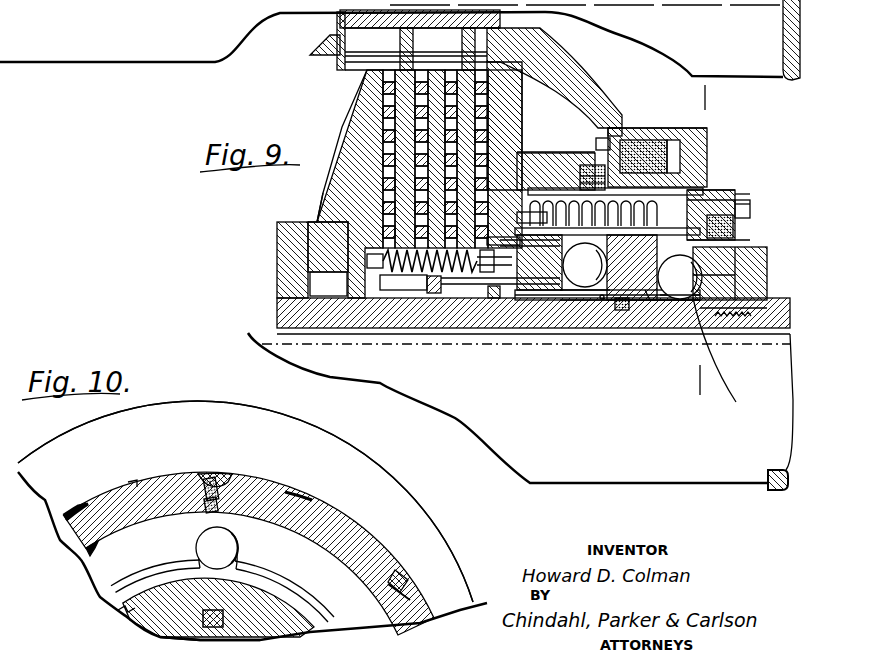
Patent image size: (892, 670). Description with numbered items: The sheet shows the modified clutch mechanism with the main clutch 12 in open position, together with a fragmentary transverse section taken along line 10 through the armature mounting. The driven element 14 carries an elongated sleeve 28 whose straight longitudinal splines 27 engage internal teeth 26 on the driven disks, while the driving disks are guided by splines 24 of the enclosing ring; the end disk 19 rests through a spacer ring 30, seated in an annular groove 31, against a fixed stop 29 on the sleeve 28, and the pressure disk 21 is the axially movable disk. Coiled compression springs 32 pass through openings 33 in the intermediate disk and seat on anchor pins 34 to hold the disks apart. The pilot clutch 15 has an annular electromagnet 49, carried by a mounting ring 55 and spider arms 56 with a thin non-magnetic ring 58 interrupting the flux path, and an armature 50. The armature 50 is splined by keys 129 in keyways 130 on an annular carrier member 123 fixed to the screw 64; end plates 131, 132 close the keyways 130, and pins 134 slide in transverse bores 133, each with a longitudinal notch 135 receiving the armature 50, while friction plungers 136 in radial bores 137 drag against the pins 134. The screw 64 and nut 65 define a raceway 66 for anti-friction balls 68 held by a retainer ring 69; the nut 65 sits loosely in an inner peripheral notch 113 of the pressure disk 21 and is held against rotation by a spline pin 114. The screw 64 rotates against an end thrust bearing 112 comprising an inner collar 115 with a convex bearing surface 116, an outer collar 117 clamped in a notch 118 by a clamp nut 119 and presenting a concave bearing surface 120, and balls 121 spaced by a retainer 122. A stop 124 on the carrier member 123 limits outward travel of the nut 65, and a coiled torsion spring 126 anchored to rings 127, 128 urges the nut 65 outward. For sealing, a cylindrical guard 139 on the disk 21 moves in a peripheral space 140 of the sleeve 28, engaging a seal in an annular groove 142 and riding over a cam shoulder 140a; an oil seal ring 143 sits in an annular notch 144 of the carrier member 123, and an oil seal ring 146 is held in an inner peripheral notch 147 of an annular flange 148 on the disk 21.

In FIG. 9, the section line 10 is at (680, 98).
In FIG. 9, the main clutch 12 is at (337, 118).
In FIG. 9, the driven element 14 is at (776, 360).
In FIG. 10, the driven element 14 is at (140, 635).
In FIG. 9, the pilot clutch 15 is at (669, 125).
In FIG. 9, the end disk 19 is at (338, 160).
In FIG. 9, the pressure disk 21 is at (510, 114).
In FIG. 9, the longitudinal splines 24 is at (362, 44).
In FIG. 9, the teeth 26 is at (416, 268).
In FIG. 9, the longitudinal splines 27 is at (331, 296).
In FIG. 10, the elongated sleeve 28 is at (118, 617).
In FIG. 9, the fixed stop 29 is at (277, 270).
In FIG. 9, the spacer ring 30 is at (315, 224).
In FIG. 9, the annular groove 31 is at (321, 200).
In FIG. 9, the coiled compression springs 32 is at (450, 292).
In FIG. 9, the openings 33 is at (436, 282).
In FIG. 9, the anchor pins 34 is at (372, 266).
In FIG. 9, the annular electromagnet 49 is at (652, 125).
In FIG. 9, the armature 50 is at (708, 157).
In FIG. 10, the armature 50 is at (392, 477).
In FIG. 9, the mounting ring 55 is at (601, 127).
In FIG. 9, the spider arms 56 is at (572, 84).
In FIG. 9, the non-magnetic ring 58 is at (613, 127).
In FIG. 9, the screw 64 is at (590, 300).
In FIG. 9, the nut 65 is at (493, 300).
In FIG. 9, the raceway 66 is at (556, 300).
In FIG. 9, the anti-friction balls 68 is at (572, 300).
In FIG. 9, the retainer ring 69 is at (602, 300).
In FIG. 9, the end thrust bearing 112 is at (668, 302).
In FIG. 9, the inner peripheral notch 113 is at (475, 248).
In FIG. 9, the spline pin 114 is at (459, 286).
In FIG. 10, the inner collar 115 is at (125, 602).
In FIG. 9, the bearing surface 116 is at (640, 300).
In FIG. 9, the outer collar 117 is at (745, 286).
In FIG. 9, the notch 118 is at (720, 312).
In FIG. 9, the clamp nut 119 is at (755, 268).
In FIG. 9, the bearing surface 120 is at (735, 254).
In FIG. 9, the balls 121 is at (693, 290).
In FIG. 10, the balls 121 is at (205, 546).
In FIG. 9, the retainer 122 is at (680, 302).
In FIG. 10, the retainer 122 is at (292, 566).
In FIG. 9, the carrier member 123 is at (632, 290).
In FIG. 10, the carrier member 123 is at (78, 550).
In FIG. 9, the stop 124 is at (622, 308).
In FIG. 9, the coiled torsion spring 126 is at (541, 152).
In FIG. 9, the anchor ring 127 is at (526, 152).
In FIG. 9, the anchor ring 128 is at (700, 187).
In FIG. 10, the keys 129 is at (100, 500).
In FIG. 10, the keyways 130 is at (128, 482).
In FIG. 9, the end plate 131 is at (708, 170).
In FIG. 9, the end plate 132 is at (745, 225).
In FIG. 10, the transverse bores 133 is at (240, 482).
In FIG. 9, the pins 134 is at (700, 200).
In FIG. 10, the pins 134 is at (212, 472).
In FIG. 10, the longitudinal notch 135 is at (236, 474).
In FIG. 9, the friction plungers 136 is at (736, 196).
In FIG. 9, the radial bores 137 is at (741, 205).
In FIG. 9, the cylindrical guard 139 is at (541, 228).
In FIG. 9, the peripheral space 140 is at (506, 246).
In FIG. 9, the cam shoulder 140a is at (730, 356).
In FIG. 9, the annular groove 142 is at (648, 302).
In FIG. 9, the oil seal ring 143 is at (740, 238).
In FIG. 9, the annular notch 144 is at (746, 215).
In FIG. 9, the oil seal ring 146 is at (592, 168).
In FIG. 9, the inner peripheral notch 147 is at (585, 166).
In FIG. 9, the annular flange 148 is at (575, 165).